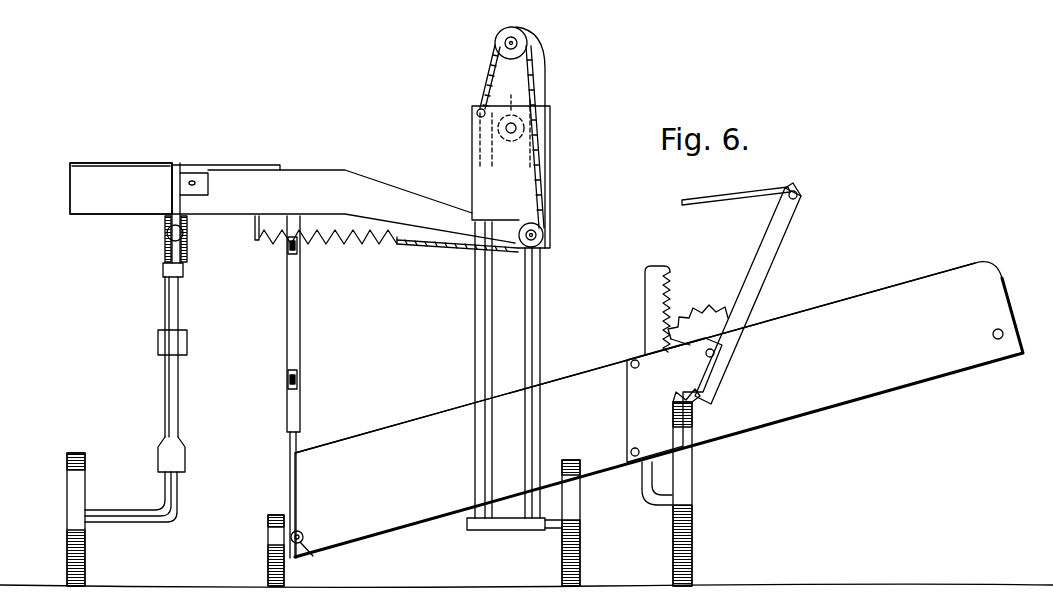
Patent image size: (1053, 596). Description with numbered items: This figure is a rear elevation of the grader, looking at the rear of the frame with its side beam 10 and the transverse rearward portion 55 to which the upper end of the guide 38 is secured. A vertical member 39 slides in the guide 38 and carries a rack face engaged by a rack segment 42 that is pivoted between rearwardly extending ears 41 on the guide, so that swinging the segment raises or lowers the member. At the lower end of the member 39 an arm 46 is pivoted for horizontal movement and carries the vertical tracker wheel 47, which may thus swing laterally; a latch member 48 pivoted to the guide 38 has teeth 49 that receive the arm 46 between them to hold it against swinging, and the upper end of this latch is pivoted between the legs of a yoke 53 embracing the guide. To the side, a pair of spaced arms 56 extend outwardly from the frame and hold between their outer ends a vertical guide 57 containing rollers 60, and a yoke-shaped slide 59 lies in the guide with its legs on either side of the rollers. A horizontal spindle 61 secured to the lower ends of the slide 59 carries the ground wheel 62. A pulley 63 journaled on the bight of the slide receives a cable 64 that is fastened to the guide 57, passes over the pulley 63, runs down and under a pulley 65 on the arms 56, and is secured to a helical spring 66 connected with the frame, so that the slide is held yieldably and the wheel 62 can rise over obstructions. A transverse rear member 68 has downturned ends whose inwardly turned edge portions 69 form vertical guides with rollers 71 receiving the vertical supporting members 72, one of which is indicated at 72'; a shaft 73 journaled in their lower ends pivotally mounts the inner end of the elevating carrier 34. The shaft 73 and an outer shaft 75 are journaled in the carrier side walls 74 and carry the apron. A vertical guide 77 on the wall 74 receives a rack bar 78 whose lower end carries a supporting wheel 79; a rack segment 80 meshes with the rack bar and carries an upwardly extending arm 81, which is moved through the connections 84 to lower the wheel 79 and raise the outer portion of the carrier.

The side beam 10 is at (68, 194).
The transverse rearward portion 55 is at (121, 188).
The rear member 68 is at (240, 165).
The arm 56 is at (388, 193).
The vertical member 39 is at (182, 167).
The rack segment 42 is at (166, 236).
The ear 41 is at (165, 254).
The guide 38 is at (184, 270).
The latch member 48 is at (178, 397).
The yoke 53 is at (188, 341).
The tooth 49 is at (170, 466).
The arm 46 is at (180, 491).
The tracker wheel 47 is at (85, 556).
The helical spring 66 is at (357, 244).
The edge portion 69 is at (297, 411).
The roller 71 is at (294, 252).
The supporting member 72 is at (268, 495).
The post 72' is at (246, 550).
The shaft 73 is at (305, 540).
The side wall 74 is at (659, 409).
The elevating carrier 34 is at (635, 358).
The shaft 75 is at (996, 340).
The guide 57 is at (530, 192).
The roller 60 is at (511, 109).
The pulley 63 is at (525, 46).
The slide 59 is at (546, 86).
The cable 64 is at (541, 159).
The pulley 65 is at (544, 240).
The spindle 61 is at (516, 529).
The ground wheel 62 is at (581, 546).
The vertical guide 77 is at (642, 398).
The rack bar 78 is at (645, 318).
The supporting wheel 79 is at (692, 531).
The rack segment 80 is at (705, 311).
The arm 81 is at (776, 251).
The connections 84 is at (700, 204).